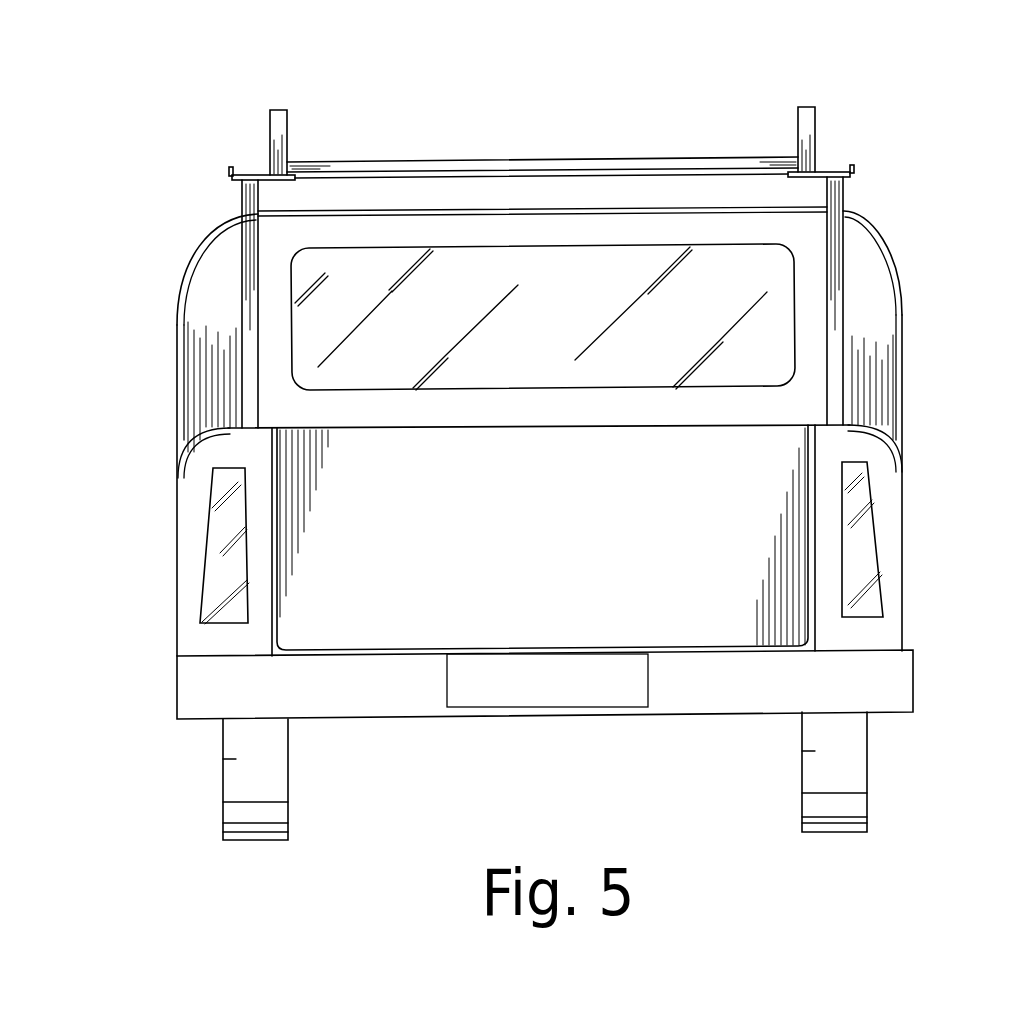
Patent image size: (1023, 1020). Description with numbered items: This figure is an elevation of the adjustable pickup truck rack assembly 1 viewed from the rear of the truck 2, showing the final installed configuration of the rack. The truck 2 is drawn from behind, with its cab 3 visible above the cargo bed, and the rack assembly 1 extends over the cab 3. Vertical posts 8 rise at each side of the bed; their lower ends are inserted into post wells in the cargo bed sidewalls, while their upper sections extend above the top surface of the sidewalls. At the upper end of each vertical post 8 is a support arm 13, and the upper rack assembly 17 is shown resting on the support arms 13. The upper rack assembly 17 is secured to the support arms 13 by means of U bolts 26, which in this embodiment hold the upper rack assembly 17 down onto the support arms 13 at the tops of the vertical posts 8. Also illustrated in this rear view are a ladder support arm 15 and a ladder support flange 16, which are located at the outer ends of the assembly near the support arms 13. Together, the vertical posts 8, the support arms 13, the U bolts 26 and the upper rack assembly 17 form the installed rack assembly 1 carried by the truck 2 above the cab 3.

The adjustable pickup truck rack assembly 1 is at (714, 194).
The pickup truck 2 is at (568, 532).
The cab 3 is at (575, 304).
The vertical post 8 is at (248, 293).
The support arm 13 is at (292, 192).
The ladder support arm 15 is at (233, 186).
The ladder support flange 16 is at (228, 174).
The upper rack assembly 17 is at (540, 155).
The U bolt 26 is at (267, 167).